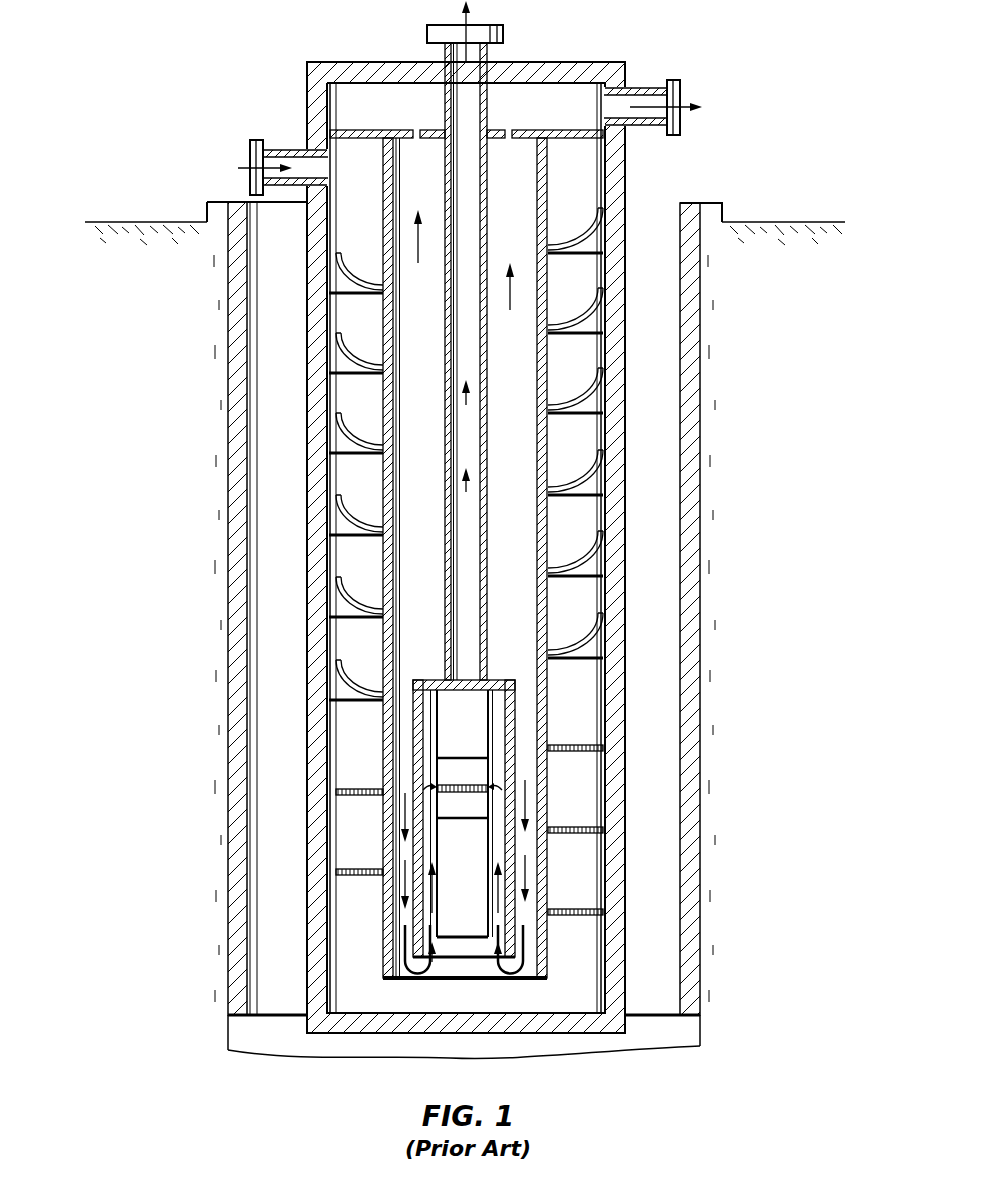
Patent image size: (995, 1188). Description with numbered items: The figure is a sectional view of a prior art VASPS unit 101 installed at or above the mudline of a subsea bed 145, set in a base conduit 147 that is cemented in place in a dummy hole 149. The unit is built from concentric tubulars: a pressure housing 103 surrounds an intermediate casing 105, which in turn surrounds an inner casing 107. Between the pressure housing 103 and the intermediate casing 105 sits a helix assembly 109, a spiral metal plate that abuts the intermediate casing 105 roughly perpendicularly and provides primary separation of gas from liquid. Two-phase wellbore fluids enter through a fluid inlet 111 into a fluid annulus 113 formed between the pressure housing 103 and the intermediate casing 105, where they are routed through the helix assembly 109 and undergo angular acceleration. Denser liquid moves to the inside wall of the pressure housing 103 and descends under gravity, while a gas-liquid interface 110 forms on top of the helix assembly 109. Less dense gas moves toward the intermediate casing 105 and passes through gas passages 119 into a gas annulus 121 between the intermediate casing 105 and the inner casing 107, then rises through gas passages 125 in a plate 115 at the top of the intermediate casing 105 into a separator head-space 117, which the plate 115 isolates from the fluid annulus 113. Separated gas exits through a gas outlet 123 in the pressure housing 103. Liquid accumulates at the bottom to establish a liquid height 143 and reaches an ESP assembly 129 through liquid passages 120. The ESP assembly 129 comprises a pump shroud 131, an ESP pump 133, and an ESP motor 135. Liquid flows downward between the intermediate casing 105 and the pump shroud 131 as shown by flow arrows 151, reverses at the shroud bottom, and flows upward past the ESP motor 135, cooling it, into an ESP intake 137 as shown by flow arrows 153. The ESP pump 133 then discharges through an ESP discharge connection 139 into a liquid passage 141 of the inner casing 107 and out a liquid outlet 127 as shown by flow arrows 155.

The VASPS unit 101 is at (300, 47).
The pressure housing 103 is at (322, 372).
The intermediate casing 105 is at (612, 280).
The inner casing 107 is at (572, 366).
The helix assembly 109 is at (355, 370).
The gas-liquid interface 110 is at (412, 433).
The fluid inlet 111 is at (250, 150).
The fluid annulus 113 is at (357, 163).
The plate 115 is at (583, 130).
The separator head-space 117 is at (402, 90).
The gas passages 119 is at (365, 335).
The liquid passages 120 is at (390, 815).
The gas annulus 121 is at (345, 407).
The gas outlet 123 is at (678, 82).
The gas passages 125 is at (512, 130).
The liquid outlet 127 is at (496, 26).
The ESP assembly 129 is at (490, 740).
The pump shroud 131 is at (516, 712).
The ESP pump 133 is at (485, 770).
The ESP motor 135 is at (482, 843).
The ESP intake 137 is at (440, 786).
The ESP discharge connection 139 is at (556, 656).
The liquid passage 141 is at (548, 472).
The liquid height 143 is at (548, 707).
The subsea bed 145 is at (172, 222).
The base conduit 147 is at (230, 275).
The dummy hole 149 is at (252, 1030).
The flow arrows 151 is at (404, 950).
The flow arrows 153 is at (525, 905).
The flow arrows 155 is at (560, 410).